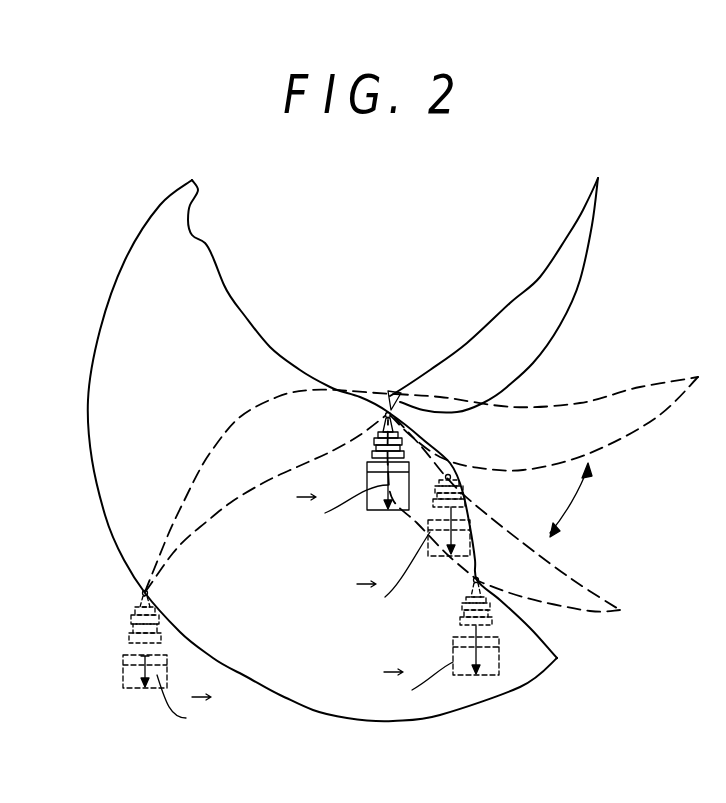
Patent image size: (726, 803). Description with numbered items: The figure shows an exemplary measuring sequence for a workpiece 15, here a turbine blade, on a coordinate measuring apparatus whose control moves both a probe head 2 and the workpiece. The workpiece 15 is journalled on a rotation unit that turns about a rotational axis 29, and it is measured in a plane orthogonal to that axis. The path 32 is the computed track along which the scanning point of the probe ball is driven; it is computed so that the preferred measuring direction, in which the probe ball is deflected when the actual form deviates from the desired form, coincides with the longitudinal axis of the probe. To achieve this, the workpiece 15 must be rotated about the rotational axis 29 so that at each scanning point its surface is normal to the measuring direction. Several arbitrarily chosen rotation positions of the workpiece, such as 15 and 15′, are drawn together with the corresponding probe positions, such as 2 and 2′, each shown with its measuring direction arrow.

The probe head 2 is at (383, 417).
The probe position 2′ is at (436, 478).
The workpiece 15 is at (520, 307).
The workpiece rotation position 15′ is at (591, 403).
The rotational axis 29 is at (388, 392).
The path 32 is at (348, 720).